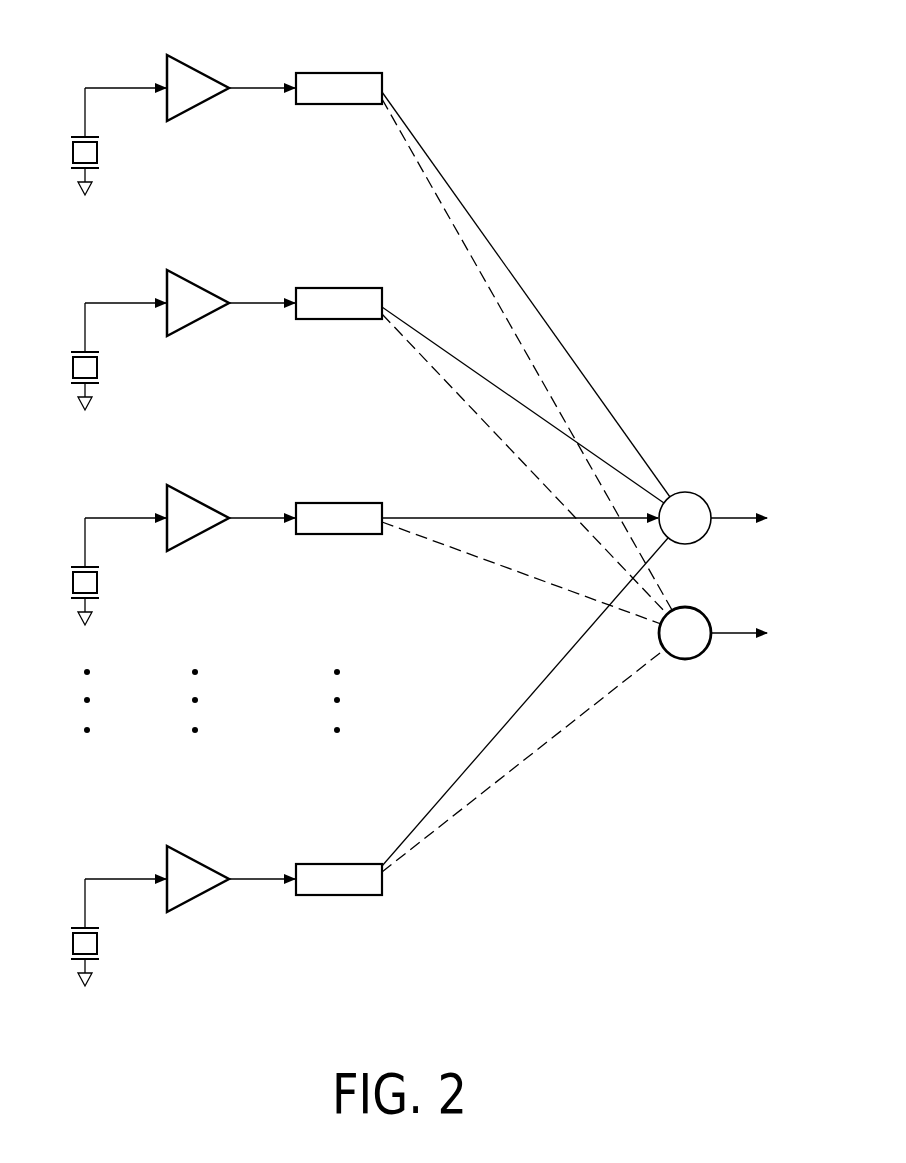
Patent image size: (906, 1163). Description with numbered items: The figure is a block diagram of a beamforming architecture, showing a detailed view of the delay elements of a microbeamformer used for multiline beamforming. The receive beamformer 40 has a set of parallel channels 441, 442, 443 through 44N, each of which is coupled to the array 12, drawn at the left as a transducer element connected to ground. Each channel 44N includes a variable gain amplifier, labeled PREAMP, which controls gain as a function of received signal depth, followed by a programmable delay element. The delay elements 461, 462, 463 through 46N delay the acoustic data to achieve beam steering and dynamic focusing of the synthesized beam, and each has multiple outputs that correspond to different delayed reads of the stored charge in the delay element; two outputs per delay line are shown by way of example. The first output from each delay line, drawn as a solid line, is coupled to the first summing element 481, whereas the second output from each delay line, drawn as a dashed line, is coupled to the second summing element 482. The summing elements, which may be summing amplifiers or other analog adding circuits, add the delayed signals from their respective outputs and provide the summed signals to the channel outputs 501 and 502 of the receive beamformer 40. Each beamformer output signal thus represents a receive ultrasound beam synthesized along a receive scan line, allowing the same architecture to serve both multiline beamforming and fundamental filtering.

The array 12 is at (75, 65).
The receive beamformer 40 is at (482, 136).
The channel 441 is at (112, 87).
The channel 442 is at (112, 302).
The channel 443 is at (112, 517).
The channel 44N is at (112, 878).
The programmable delay element 461 is at (343, 72).
The programmable delay element 462 is at (343, 287).
The programmable delay element 463 is at (343, 502).
The delay element 46N is at (343, 862).
The first summing element 481 is at (693, 492).
The second summing element 482 is at (693, 660).
The channel output 501 is at (760, 512).
The channel output 502 is at (760, 642).